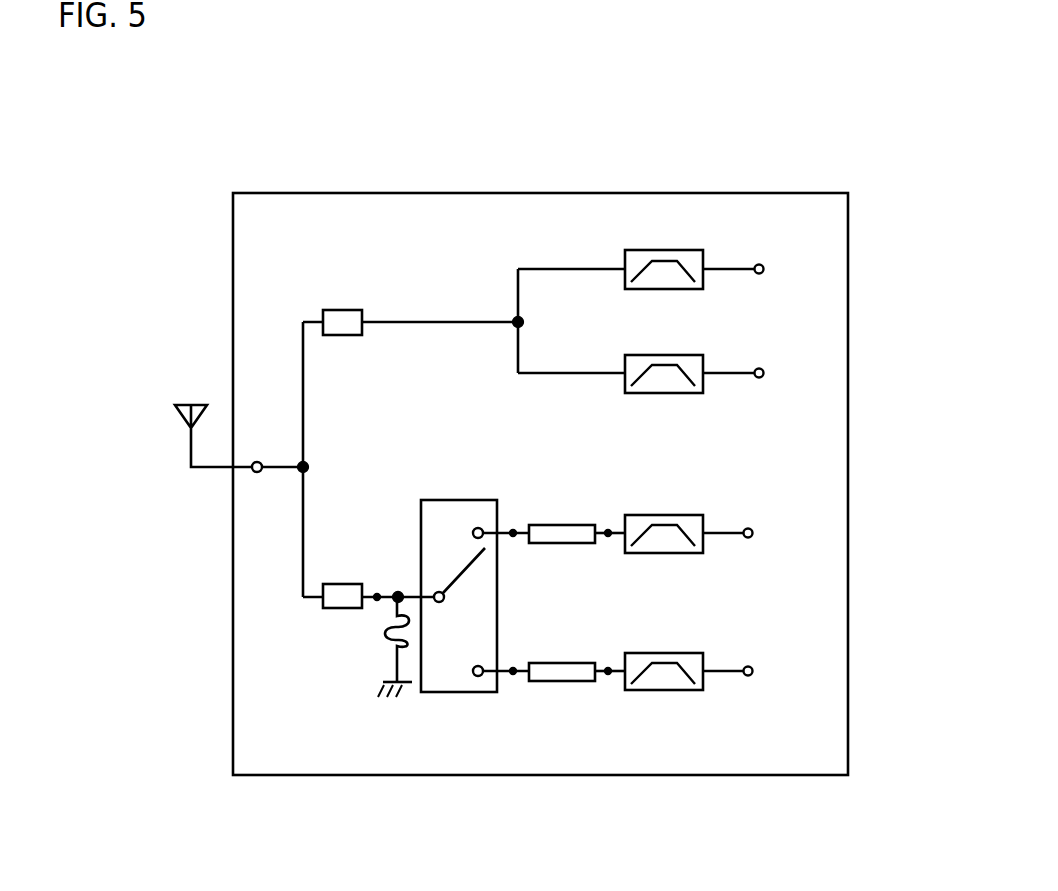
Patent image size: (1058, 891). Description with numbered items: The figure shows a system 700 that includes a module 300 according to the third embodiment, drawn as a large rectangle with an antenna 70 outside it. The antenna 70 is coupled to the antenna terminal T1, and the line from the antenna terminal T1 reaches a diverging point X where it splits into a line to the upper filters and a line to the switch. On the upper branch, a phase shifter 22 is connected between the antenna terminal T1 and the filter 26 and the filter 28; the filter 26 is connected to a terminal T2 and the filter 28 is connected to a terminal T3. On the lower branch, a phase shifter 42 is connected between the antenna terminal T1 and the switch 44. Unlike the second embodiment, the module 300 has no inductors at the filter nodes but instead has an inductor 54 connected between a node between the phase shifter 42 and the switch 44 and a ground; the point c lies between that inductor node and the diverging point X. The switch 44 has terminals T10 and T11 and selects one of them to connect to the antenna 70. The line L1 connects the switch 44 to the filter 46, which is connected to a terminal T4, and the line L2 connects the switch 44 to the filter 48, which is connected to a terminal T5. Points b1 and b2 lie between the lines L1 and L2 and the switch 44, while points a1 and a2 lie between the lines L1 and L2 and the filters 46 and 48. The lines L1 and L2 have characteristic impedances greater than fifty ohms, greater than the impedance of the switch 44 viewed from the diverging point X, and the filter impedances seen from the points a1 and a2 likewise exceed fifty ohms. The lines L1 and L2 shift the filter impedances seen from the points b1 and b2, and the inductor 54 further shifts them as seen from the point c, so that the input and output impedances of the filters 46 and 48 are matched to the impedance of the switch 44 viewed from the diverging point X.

The system 700 is at (806, 151).
The module 300 is at (529, 192).
The antenna 70 is at (197, 404).
The antenna terminal T1 is at (258, 461).
The diverging point X is at (309, 465).
The phase shifter 22 is at (347, 310).
The filter 26 is at (690, 250).
The filter 28 is at (690, 356).
The terminal T2 is at (764, 269).
The terminal T3 is at (764, 373).
The phase shifter 42 is at (349, 584).
The point c is at (377, 592).
The inductor 54 is at (384, 636).
The switch 44 is at (456, 694).
The terminal T10 is at (490, 518).
The terminal T11 is at (490, 657).
The point b1 is at (513, 528).
The point b2 is at (513, 666).
The line L1 is at (562, 525).
The line L2 is at (562, 663).
The point a1 is at (608, 528).
The point a2 is at (608, 666).
The filter 46 is at (690, 515).
The filter 48 is at (690, 653).
The terminal T4 is at (753, 533).
The terminal T5 is at (753, 671).